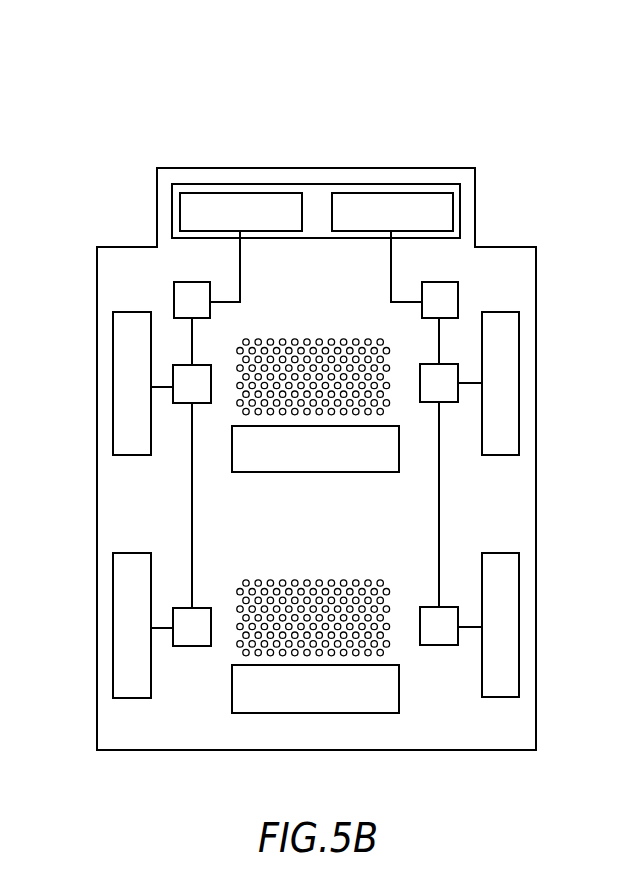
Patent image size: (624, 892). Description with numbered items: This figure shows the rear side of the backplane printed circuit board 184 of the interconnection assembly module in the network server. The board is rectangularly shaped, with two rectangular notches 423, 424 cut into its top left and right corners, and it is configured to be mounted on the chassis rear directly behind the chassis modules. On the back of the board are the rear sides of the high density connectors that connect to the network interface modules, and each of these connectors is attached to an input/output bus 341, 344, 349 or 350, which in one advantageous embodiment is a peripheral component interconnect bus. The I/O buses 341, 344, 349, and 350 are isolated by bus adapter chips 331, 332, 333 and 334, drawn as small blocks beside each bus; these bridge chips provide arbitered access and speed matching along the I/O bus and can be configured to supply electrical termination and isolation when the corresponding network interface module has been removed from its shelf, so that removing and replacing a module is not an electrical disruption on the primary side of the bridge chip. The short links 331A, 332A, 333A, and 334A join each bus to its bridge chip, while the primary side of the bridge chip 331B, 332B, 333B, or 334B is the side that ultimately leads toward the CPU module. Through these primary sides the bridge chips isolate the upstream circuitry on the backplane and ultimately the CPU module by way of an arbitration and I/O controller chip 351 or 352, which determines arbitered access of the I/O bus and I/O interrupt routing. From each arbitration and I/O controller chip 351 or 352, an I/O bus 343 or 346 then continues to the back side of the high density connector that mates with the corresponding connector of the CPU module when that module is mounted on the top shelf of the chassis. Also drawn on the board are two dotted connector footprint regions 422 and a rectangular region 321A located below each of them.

The backplane printed circuit board 184 is at (121, 100).
The rectangular notch 424 is at (132, 225).
The rectangular notch 423 is at (502, 223).
The I/O bus 343 is at (240, 256).
The I/O bus 346 is at (391, 256).
The arbitration and I/O controller chip 351 is at (174, 300).
The arbitration and I/O controller chip 352 is at (458, 300).
The I/O bus 341 is at (168, 385).
The I/O bus 344 is at (460, 380).
The I/O bus 349 is at (172, 625).
The I/O bus 350 is at (460, 622).
The bus adapter chip 331 is at (185, 403).
The bus adapter chip 333 is at (452, 402).
The bus adapter chip 332 is at (187, 646).
The bus adapter chip 334 is at (443, 645).
The left front motor shaft 331A is at (172, 393).
The right front motor shaft 333A is at (458, 385).
The left rear motor shaft 332A is at (172, 635).
The right rear motor shaft 334A is at (458, 632).
The primary side of the bridge chip 331B is at (193, 365).
The primary side of the bridge chip 333B is at (438, 364).
The primary side of the bridge chip 332B is at (192, 608).
The primary side of the bridge chip 334B is at (438, 607).
The perforated cleaning pad 422 is at (318, 338).
The fluid reservoir 321A is at (320, 472).